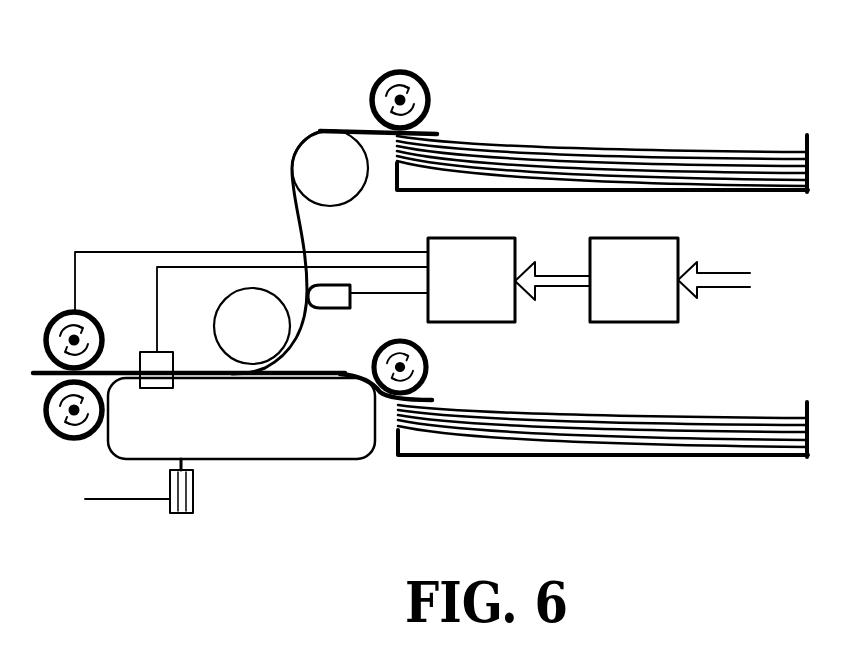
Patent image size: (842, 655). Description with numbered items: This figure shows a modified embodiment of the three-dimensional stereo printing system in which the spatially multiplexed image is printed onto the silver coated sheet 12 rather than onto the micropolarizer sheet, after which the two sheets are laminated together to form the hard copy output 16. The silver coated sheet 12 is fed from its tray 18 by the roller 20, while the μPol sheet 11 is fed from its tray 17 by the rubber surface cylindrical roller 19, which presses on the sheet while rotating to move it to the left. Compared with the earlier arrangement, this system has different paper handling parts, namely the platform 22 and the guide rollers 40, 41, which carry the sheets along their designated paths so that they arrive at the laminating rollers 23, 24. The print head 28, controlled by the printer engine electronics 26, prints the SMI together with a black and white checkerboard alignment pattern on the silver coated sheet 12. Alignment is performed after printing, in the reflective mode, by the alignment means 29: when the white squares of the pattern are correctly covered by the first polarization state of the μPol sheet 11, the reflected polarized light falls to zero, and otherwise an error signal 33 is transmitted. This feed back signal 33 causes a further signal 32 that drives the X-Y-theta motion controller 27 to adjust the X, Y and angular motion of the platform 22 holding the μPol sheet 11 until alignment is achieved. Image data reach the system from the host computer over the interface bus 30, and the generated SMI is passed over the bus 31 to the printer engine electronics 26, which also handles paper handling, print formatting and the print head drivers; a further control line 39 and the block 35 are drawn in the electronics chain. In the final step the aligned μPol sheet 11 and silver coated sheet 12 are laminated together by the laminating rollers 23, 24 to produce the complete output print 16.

The μPol sheet 11 is at (352, 388).
The silver coated sheet 12 is at (607, 150).
The 3-D stereo hard copy output 16 is at (38, 372).
The tray 17 is at (698, 458).
The tray 18 is at (740, 192).
The rubber surface cylindrical roller 19 is at (430, 355).
The roller 20 is at (392, 71).
The platform 22 is at (310, 466).
The laminating roller 23 is at (75, 328).
The laminating roller 24 is at (362, 294).
The printer engine electronics 26 is at (455, 237).
The X-Y-theta motion controller 27 is at (194, 496).
The print head 28 is at (322, 309).
The alignment means 29 is at (168, 352).
The interface bus 30 is at (740, 288).
The bus 31 is at (557, 272).
The signal 32 is at (120, 500).
The feed back signal 33 is at (152, 310).
The control unit 35 is at (620, 238).
The signal line 39 is at (118, 252).
The paper handling part 40 is at (232, 298).
The paper handling part 41 is at (355, 200).